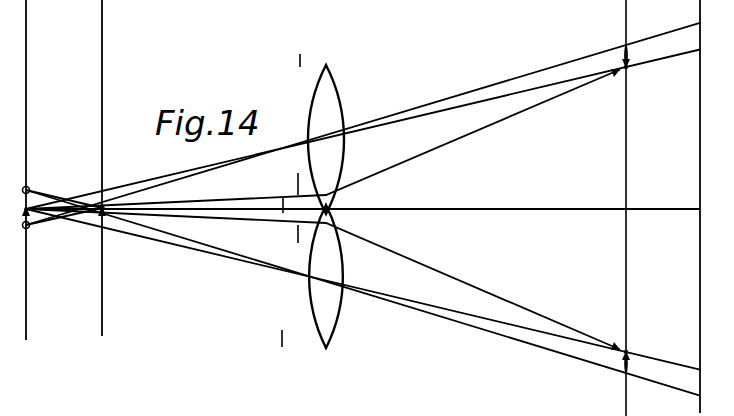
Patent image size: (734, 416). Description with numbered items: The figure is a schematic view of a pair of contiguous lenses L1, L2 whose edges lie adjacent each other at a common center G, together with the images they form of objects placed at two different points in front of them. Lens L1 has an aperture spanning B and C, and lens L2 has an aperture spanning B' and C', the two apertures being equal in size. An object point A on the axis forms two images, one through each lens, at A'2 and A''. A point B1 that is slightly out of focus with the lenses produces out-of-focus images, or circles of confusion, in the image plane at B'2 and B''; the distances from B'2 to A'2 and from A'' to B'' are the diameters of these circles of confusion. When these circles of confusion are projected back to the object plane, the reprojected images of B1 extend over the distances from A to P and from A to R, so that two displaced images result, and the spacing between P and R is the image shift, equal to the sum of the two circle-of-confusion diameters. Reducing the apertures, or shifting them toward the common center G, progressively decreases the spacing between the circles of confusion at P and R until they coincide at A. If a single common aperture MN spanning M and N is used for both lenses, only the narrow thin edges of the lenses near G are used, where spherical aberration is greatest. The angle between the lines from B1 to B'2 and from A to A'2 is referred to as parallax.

The circle of confusion point R is at (16, 189).
The object point A is at (14, 210).
The circle of confusion point P is at (16, 231).
The out of focus point B1 is at (112, 198).
The aperture edge B is at (307, 61).
The lens L1 is at (343, 98).
The lens L2 is at (344, 253).
The aperture edge M is at (296, 176).
The aperture edge C is at (288, 197).
The aperture edge B' is at (305, 221).
The aperture edge N is at (297, 243).
The aperture edge C' is at (291, 342).
The common center of the two lenses G is at (334, 207).
The circle of confusion B'2 is at (616, 50).
The image point A'2 is at (638, 77).
The image point A'' is at (636, 348).
The circle of confusion B'' is at (616, 372).